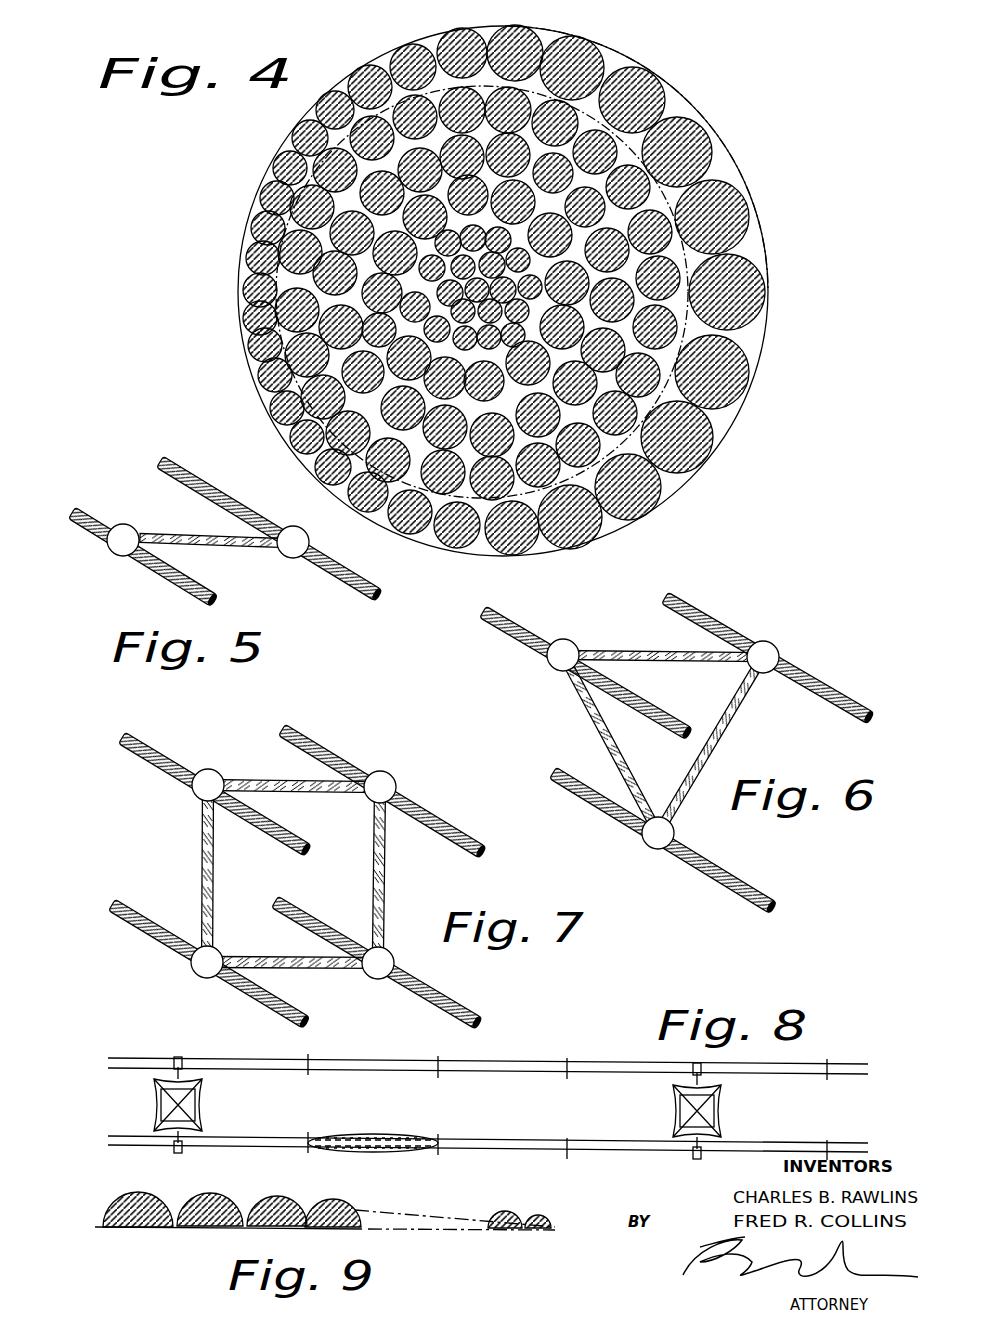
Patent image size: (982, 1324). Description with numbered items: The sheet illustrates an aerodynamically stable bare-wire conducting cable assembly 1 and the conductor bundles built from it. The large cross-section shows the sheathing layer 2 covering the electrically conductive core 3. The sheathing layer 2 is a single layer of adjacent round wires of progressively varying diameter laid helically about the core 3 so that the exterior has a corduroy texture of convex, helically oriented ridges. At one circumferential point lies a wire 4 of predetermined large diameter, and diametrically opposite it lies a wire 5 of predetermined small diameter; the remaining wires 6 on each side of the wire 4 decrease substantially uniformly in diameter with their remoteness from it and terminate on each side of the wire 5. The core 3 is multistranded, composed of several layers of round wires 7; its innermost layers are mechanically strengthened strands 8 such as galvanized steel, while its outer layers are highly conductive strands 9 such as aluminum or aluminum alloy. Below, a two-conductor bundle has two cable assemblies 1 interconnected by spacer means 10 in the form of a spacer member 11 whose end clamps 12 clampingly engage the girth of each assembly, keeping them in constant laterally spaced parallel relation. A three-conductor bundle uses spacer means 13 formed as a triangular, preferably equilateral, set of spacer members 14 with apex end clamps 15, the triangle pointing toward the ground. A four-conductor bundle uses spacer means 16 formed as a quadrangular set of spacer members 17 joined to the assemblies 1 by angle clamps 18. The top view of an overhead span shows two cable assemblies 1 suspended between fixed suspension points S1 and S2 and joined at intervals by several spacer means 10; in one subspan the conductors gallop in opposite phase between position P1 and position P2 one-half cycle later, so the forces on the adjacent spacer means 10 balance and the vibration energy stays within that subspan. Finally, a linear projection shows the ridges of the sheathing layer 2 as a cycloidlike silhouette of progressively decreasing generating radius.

In FIG. 4, the conducting cable assembly 1 is at (700, 96).
In FIG. 5, the conducting cable assembly 1 is at (163, 575).
In FIG. 6, the conducting cable assembly 1 is at (520, 638).
In FIG. 7, the conducting cable assembly 1 is at (123, 735).
In FIG. 8, the conducting cable assembly 1 is at (132, 1142).
In FIG. 4, the sheathing layer 2 is at (722, 161).
In FIG. 4, the electrically conductive core 3 is at (655, 207).
In FIG. 4, the large-diameter wire 4 is at (735, 290).
In FIG. 4, the small-diameter wire 5 is at (258, 290).
In FIG. 4, the remaining wires 6 is at (705, 440).
In FIG. 4, the core wires 7 is at (270, 390).
In FIG. 4, the mechanically strengthened strands 8 is at (298, 447).
In FIG. 4, the highly conductive strands 9 is at (500, 500).
In FIG. 5, the spacer means 10 is at (176, 526).
In FIG. 8, the spacer means 10 is at (308, 1063).
In FIG. 5, the spacer member 11 is at (218, 549).
In FIG. 5, the end clamps 12 is at (113, 556).
In FIG. 8, the end clamps 12 is at (305, 1062).
In FIG. 6, the spacer means 13 is at (745, 735).
In FIG. 6, the spacer members 14 is at (583, 715).
In FIG. 6, the apex end clamps 15 is at (565, 640).
In FIG. 7, the spacer means 16 is at (260, 773).
In FIG. 7, the spacer members 17 is at (382, 855).
In FIG. 7, the angle clamps 18 is at (193, 788).
In FIG. 8, the first oscillation position P1 is at (407, 1133).
In FIG. 8, the second oscillation position P2 is at (318, 1182).
In FIG. 8, the first suspension point S1 is at (178, 1119).
In FIG. 8, the second suspension point S2 is at (697, 1124).